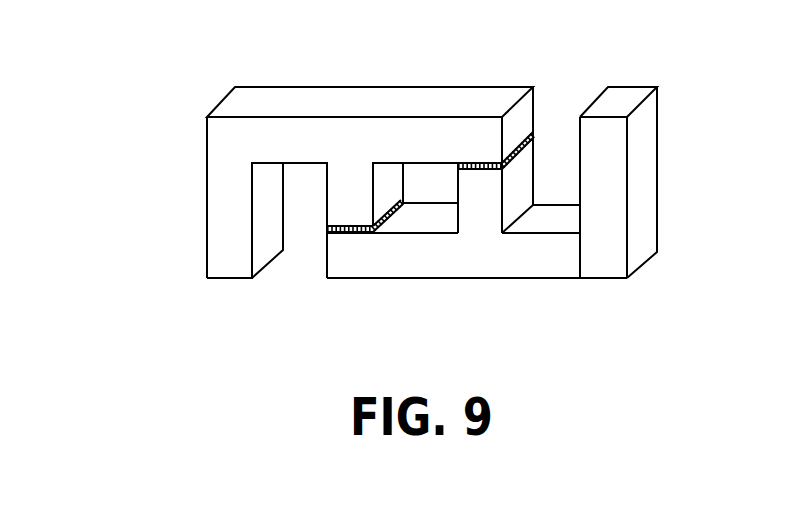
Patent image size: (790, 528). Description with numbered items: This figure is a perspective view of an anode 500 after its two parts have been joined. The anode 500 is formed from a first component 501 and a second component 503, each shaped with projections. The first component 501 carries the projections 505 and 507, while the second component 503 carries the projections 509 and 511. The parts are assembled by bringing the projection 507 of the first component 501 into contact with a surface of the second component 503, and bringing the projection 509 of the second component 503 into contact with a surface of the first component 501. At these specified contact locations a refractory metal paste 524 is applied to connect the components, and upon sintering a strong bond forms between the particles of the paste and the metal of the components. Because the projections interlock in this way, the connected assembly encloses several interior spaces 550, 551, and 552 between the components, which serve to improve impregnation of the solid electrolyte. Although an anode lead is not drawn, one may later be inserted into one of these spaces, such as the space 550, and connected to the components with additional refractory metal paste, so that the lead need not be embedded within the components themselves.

The anode 500 is at (138, 171).
The first component 501 is at (452, 100).
The second component 503 is at (597, 262).
The projection 505 is at (247, 221).
The projection 507 is at (367, 210).
The projection 509 is at (498, 210).
The projection 511 is at (620, 210).
The refractory metal paste 524 is at (488, 163).
The interior space 550 is at (448, 196).
The interior space 551 is at (266, 223).
The interior space 552 is at (573, 182).